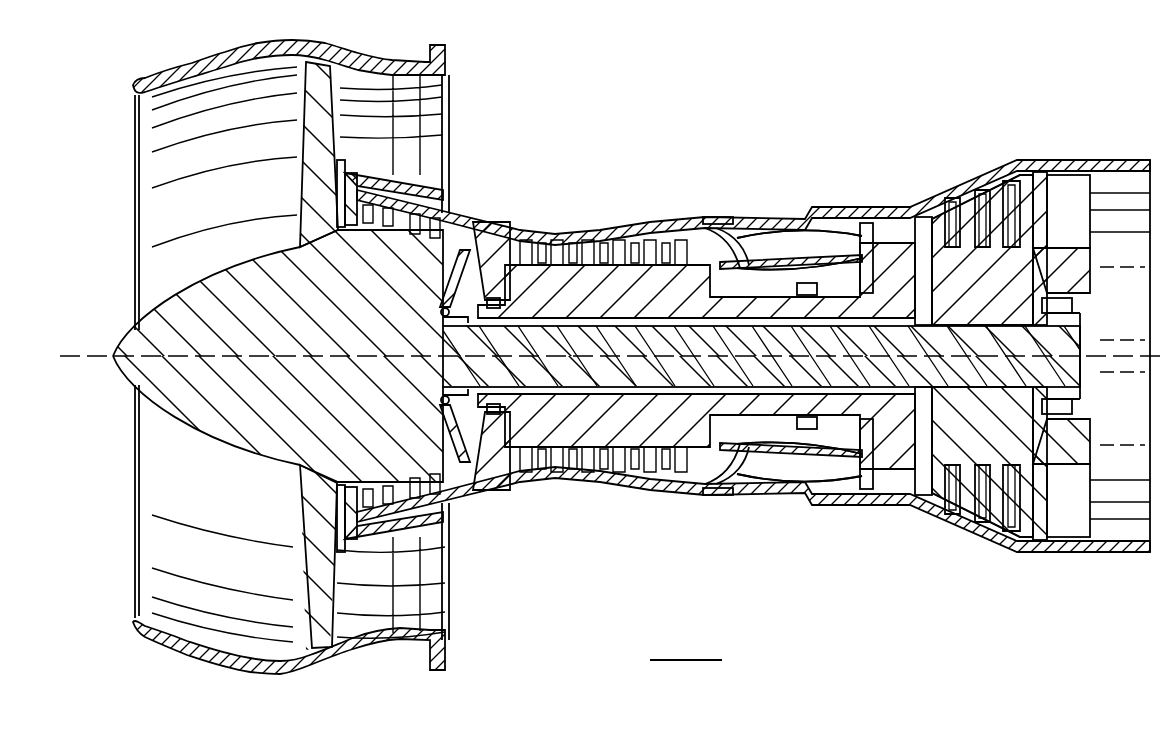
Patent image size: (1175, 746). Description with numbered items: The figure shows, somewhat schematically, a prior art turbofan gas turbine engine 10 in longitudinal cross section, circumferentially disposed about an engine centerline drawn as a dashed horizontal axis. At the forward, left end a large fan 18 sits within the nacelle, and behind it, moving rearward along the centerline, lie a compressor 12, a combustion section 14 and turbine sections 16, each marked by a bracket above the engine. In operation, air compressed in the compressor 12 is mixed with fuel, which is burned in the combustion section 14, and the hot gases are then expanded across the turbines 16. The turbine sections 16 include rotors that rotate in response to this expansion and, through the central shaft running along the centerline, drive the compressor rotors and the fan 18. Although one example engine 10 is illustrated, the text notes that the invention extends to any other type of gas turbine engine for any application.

The gas turbine engine 10 is at (502, 84).
The compressor 12 is at (700, 163).
The combustion section 14 is at (866, 163).
The turbine sections 16 is at (1100, 128).
The fan 18 is at (318, 572).